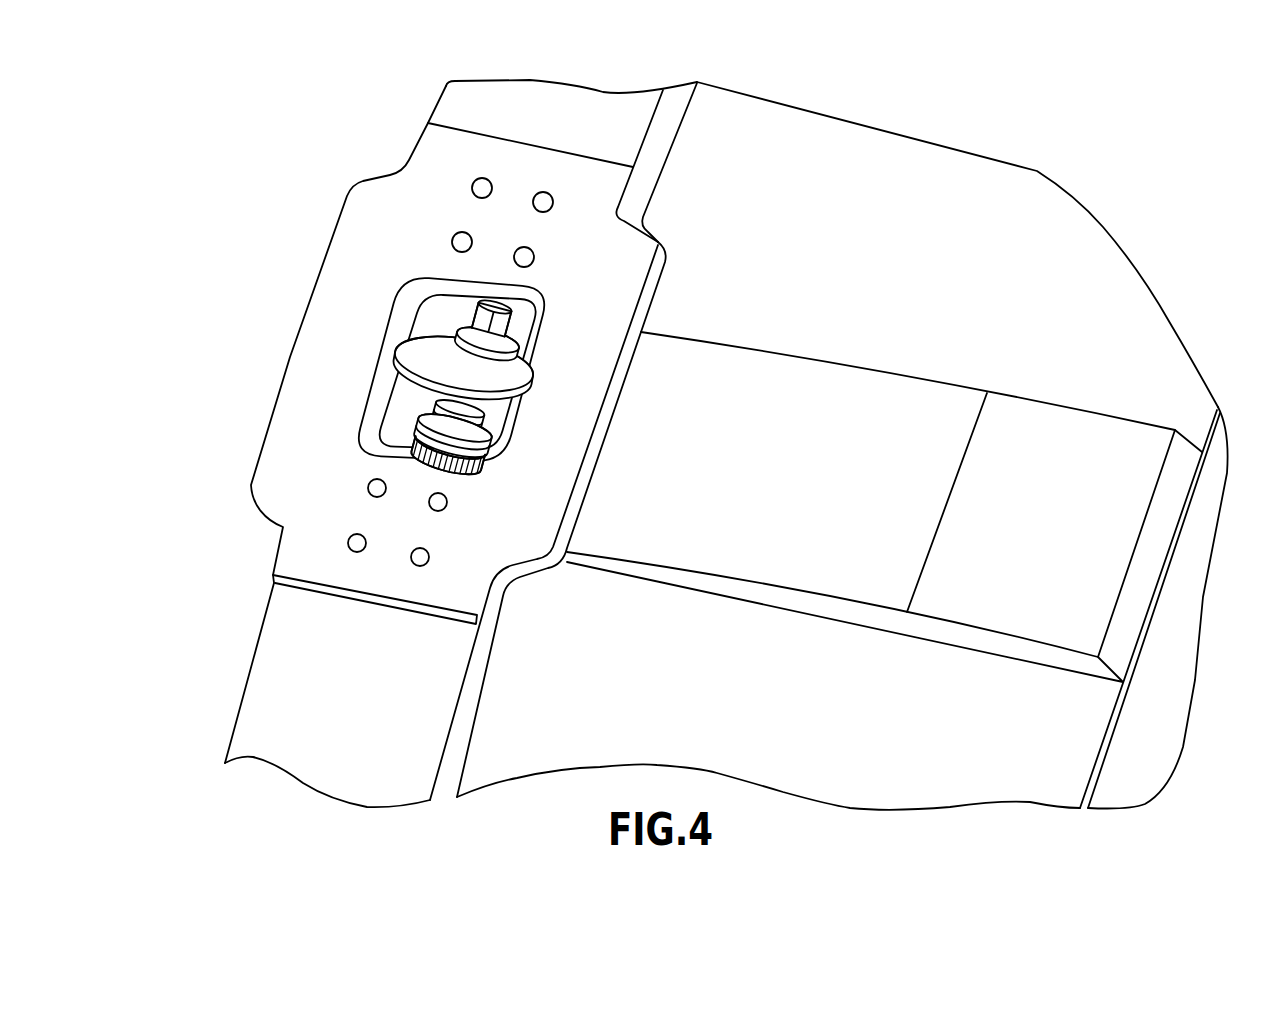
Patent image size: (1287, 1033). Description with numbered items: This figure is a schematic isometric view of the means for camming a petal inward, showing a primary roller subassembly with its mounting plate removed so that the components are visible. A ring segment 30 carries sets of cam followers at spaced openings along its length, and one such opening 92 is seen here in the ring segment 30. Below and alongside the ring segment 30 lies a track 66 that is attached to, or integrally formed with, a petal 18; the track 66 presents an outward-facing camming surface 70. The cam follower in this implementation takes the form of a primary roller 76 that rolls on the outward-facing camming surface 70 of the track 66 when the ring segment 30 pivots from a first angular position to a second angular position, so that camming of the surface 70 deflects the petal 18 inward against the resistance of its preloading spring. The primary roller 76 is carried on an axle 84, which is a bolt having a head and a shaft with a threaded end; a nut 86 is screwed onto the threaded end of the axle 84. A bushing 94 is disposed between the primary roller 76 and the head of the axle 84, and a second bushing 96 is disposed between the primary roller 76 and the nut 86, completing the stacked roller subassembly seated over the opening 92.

The petal 18 is at (1078, 245).
The ring segment 30 is at (408, 670).
The track 66 is at (932, 630).
The outward-facing camming surface 70 is at (875, 405).
The primary roller 76 is at (438, 367).
The axle 84 is at (440, 462).
The nut 86 is at (482, 323).
The opening 92 is at (377, 413).
The bushing 94 is at (490, 460).
The bushing 96 is at (519, 340).